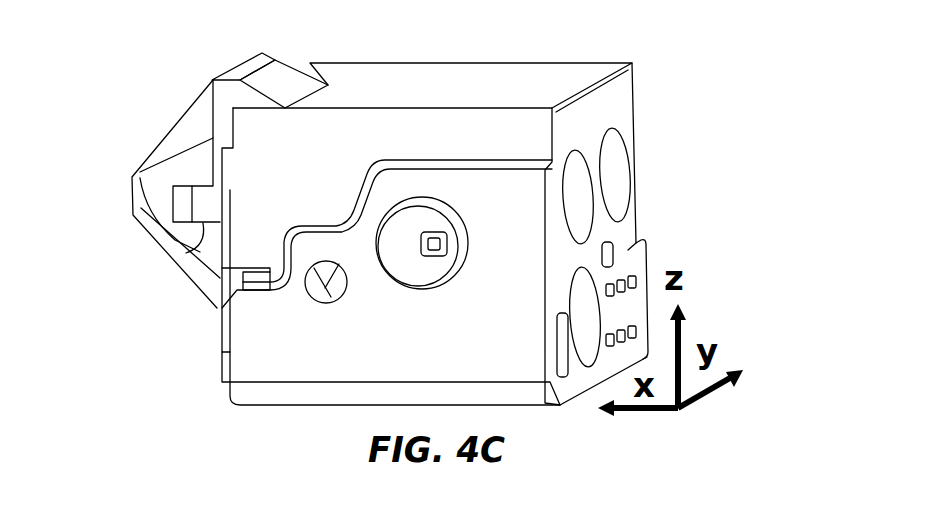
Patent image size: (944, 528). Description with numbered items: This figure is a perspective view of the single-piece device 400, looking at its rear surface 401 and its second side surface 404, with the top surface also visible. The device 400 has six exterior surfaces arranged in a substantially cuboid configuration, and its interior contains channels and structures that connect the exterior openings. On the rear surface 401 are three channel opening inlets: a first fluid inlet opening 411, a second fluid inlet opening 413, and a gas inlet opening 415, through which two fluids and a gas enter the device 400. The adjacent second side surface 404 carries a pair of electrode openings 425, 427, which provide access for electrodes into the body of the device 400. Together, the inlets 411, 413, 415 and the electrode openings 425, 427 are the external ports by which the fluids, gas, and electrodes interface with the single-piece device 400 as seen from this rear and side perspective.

The single-piece device 400 is at (112, 90).
The rear surface 401 is at (613, 112).
The second side surface 404 is at (270, 362).
The first fluid inlet opening 411 is at (578, 167).
The second fluid inlet opening 413 is at (613, 158).
The gas inlet opening 415 is at (588, 310).
The electrode opening 425 is at (410, 263).
The electrode opening 427 is at (312, 291).